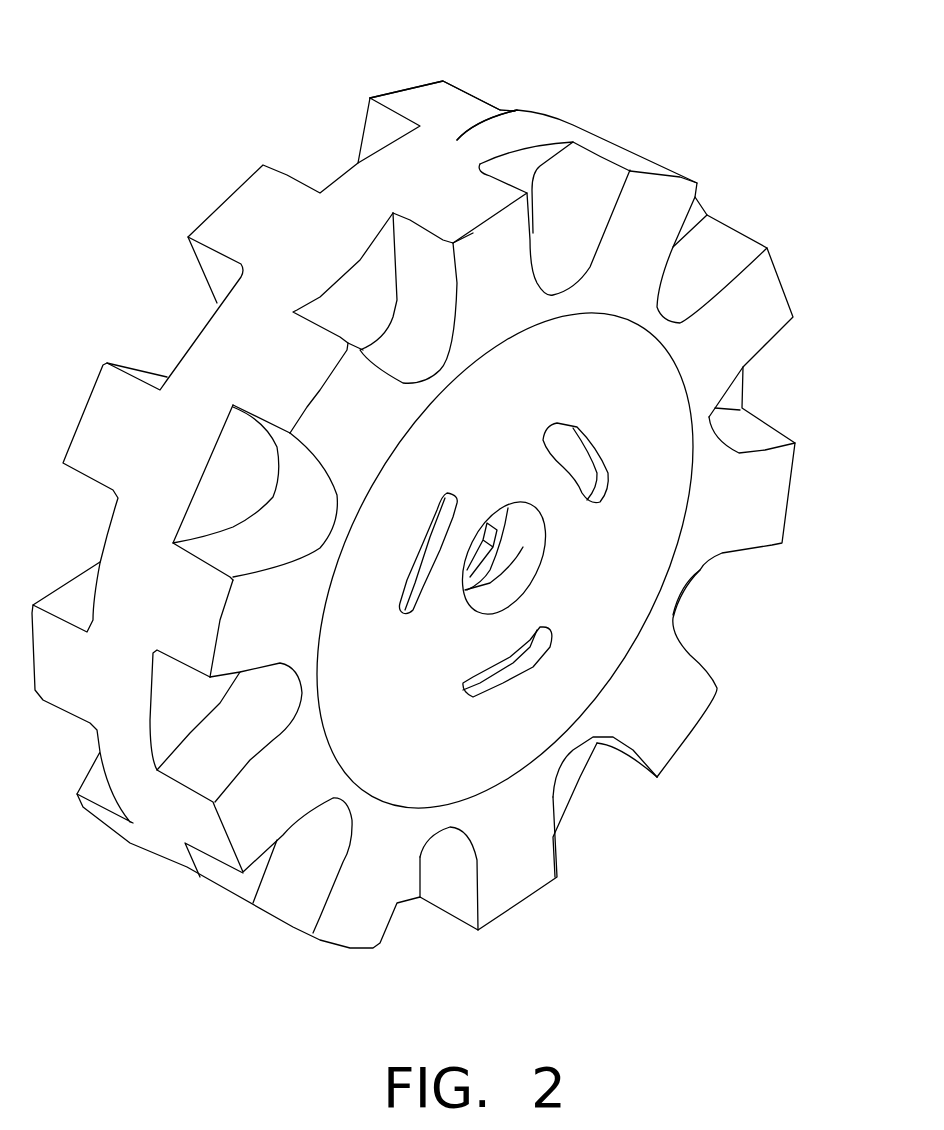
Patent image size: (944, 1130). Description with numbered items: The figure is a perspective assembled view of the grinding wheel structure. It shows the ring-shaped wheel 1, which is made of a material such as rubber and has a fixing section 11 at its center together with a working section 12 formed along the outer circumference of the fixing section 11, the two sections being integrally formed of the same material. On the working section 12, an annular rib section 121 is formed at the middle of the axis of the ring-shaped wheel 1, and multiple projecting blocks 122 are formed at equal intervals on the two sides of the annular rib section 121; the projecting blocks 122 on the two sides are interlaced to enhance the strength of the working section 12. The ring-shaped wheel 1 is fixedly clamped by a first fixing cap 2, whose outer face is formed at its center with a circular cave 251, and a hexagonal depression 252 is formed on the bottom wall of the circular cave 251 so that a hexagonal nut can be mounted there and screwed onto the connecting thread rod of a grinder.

The ring-shaped wheel 1 is at (451, 492).
The fixing section 11 is at (451, 484).
The working section 12 is at (511, 158).
The annular rib section 121 is at (517, 110).
The projecting blocks 122 is at (430, 103).
The first fixing cap 2 is at (514, 613).
The circular cave 251 is at (523, 547).
The hexagonal depression 252 is at (473, 550).